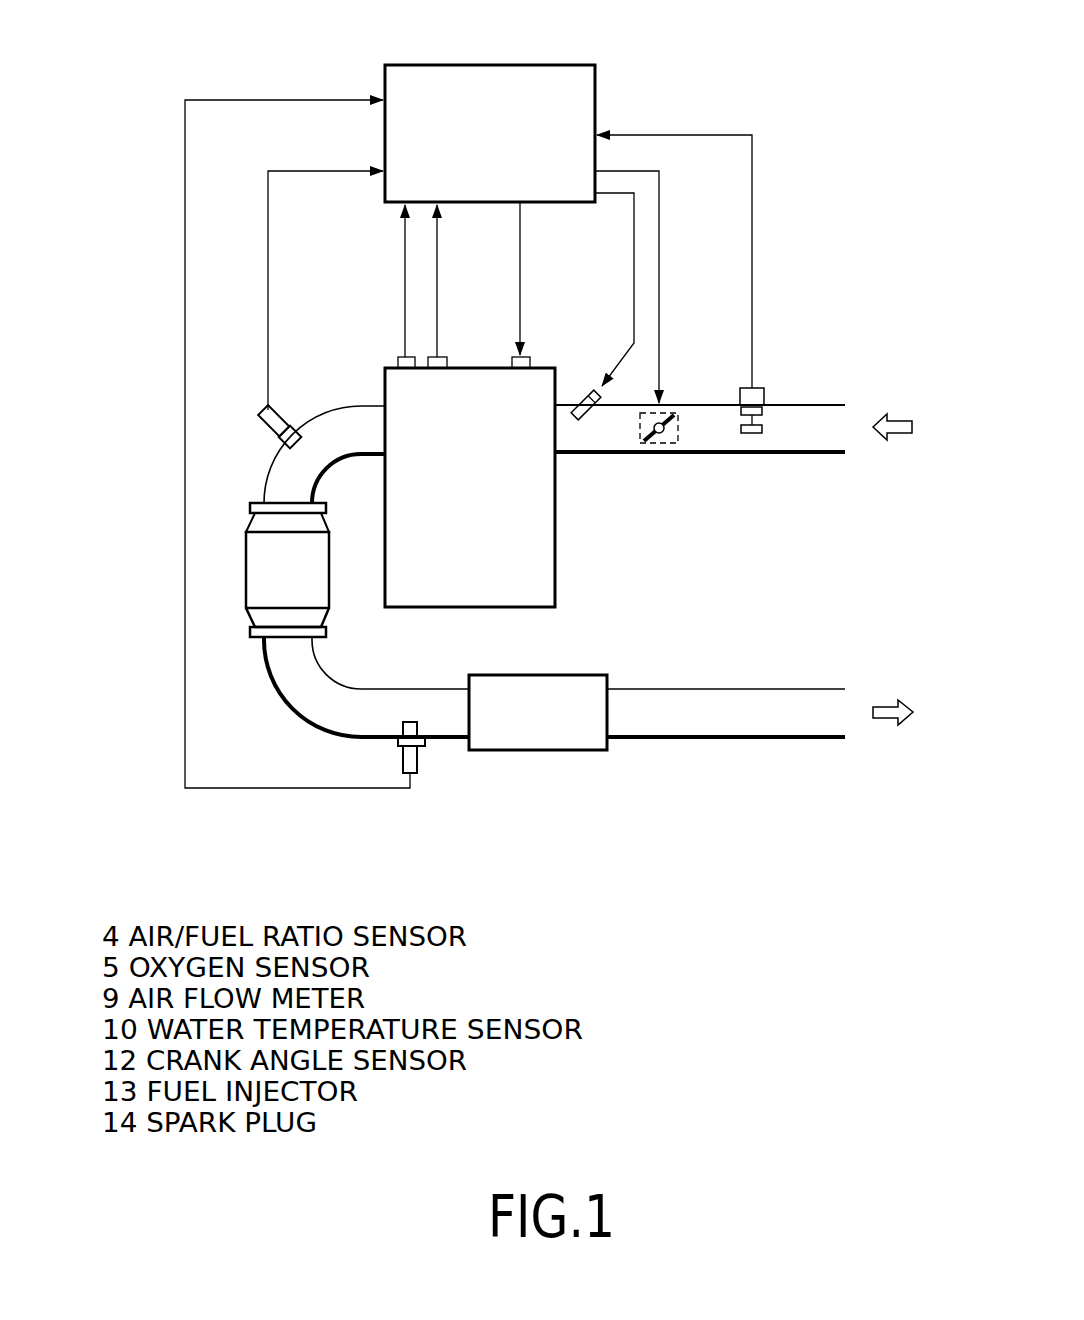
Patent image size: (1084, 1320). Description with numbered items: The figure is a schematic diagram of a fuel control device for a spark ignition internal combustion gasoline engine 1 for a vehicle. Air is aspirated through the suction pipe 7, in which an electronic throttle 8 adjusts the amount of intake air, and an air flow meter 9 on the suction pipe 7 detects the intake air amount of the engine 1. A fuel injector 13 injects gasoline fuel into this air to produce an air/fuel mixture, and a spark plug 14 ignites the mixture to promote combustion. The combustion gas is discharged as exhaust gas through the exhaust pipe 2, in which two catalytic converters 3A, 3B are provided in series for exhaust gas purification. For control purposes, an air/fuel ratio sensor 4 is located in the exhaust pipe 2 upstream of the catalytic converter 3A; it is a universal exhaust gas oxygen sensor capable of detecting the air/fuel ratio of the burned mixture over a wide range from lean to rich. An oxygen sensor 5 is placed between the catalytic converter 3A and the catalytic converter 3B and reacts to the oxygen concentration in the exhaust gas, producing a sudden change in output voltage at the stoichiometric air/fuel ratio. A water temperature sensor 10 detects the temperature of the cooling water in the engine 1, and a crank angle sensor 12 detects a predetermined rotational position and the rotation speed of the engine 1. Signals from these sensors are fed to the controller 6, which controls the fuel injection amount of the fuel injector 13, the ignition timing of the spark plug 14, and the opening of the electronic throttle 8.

The engine 1 is at (547, 550).
The exhaust pipe 2 is at (300, 715).
The catalytic converter 3A is at (320, 600).
The catalytic converter 3B is at (565, 739).
The air/fuel ratio sensor 4 is at (278, 410).
The oxygen sensor 5 is at (412, 757).
The controller 6 is at (525, 65).
The suction pipe 7 is at (720, 455).
The electronic throttle 8 is at (675, 410).
The air flow meter 9 is at (764, 390).
The water temperature sensor 10 is at (398, 357).
The crank angle sensor 12 is at (440, 357).
The fuel injector 13 is at (585, 392).
The spark plug 14 is at (530, 357).